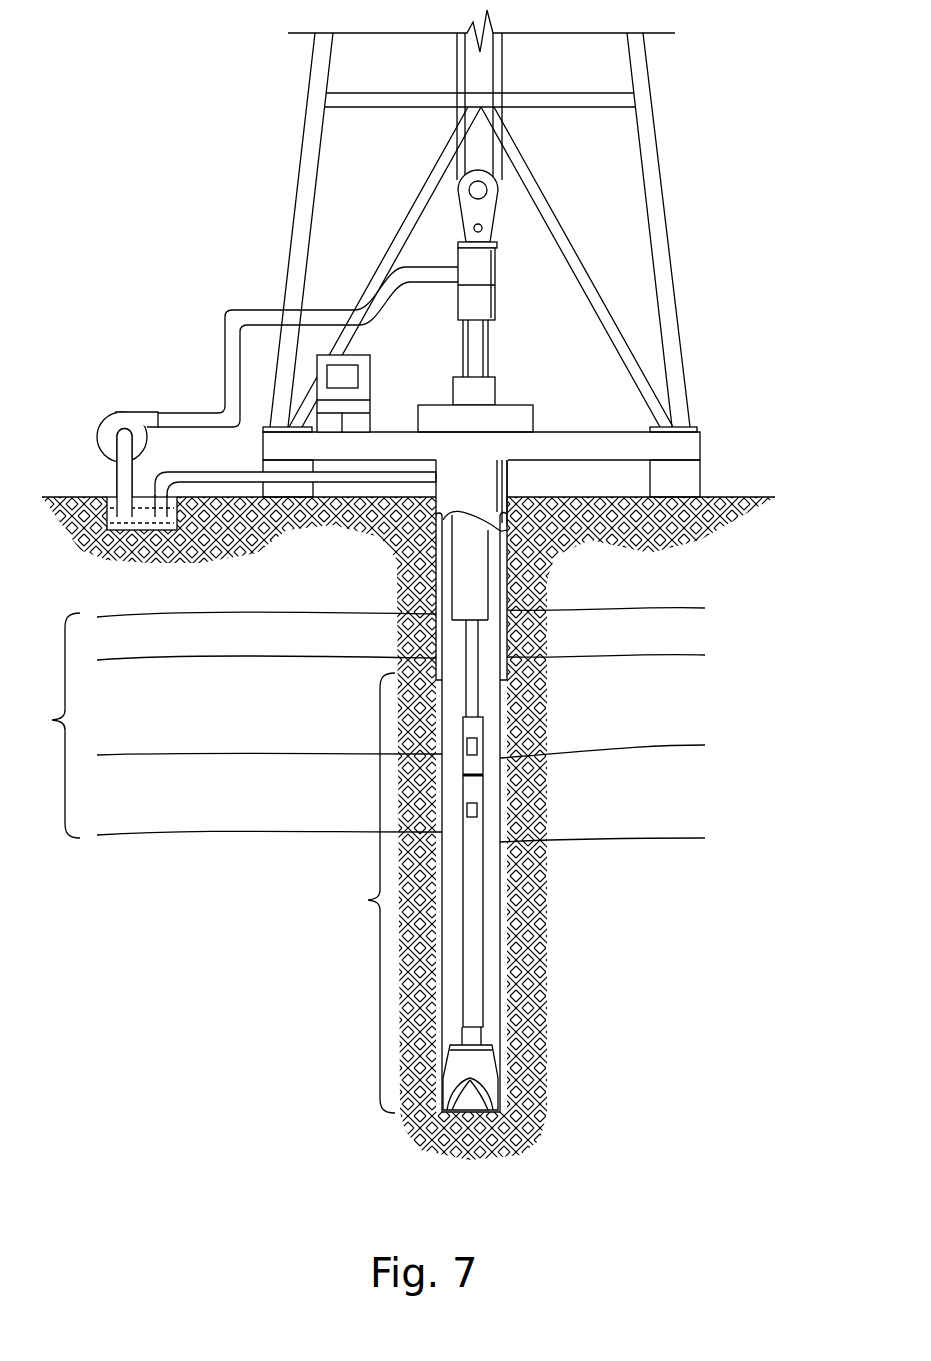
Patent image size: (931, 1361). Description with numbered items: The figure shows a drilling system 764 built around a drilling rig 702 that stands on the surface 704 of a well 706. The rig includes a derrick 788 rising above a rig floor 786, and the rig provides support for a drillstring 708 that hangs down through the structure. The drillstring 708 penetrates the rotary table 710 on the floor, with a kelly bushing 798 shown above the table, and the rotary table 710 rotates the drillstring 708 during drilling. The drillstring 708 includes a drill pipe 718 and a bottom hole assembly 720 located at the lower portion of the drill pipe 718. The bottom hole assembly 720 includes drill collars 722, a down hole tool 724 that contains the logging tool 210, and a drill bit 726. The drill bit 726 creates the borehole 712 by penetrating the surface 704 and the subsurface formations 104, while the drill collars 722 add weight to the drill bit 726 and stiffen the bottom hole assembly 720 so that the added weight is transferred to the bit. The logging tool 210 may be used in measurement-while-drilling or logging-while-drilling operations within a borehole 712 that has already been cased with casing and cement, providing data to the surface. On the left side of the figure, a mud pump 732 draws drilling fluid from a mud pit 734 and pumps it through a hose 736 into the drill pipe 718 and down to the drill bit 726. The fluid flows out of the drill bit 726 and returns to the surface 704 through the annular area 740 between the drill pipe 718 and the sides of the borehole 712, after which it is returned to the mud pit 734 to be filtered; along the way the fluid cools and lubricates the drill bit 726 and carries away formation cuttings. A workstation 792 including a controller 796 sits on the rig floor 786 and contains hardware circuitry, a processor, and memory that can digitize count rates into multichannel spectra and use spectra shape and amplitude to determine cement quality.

The drilling system 764 is at (178, 125).
The derrick 788 is at (655, 120).
The drilling rig 702 is at (675, 220).
The hose 736 is at (240, 310).
The mud pump 732 is at (130, 413).
The workstation 792 is at (383, 371).
The controller 796 is at (359, 378).
The rotary table 710 is at (442, 405).
The kelly bushing 798 is at (496, 392).
The rig floor 786 is at (700, 445).
The well 706 is at (520, 493).
The surface 704 is at (722, 497).
The mud pit 734 is at (127, 532).
The drill collars 722 is at (490, 575).
The drill pipe 718 is at (480, 652).
The annular area 740 is at (495, 718).
The logging tool 210 is at (480, 810).
The subsurface formations 104 is at (354, 725).
The bottom hole assembly 720 is at (408, 893).
The drillstring 708 is at (486, 898).
The borehole 712 is at (500, 978).
The down hole tool 724 is at (470, 1007).
The drill bit 726 is at (478, 1068).